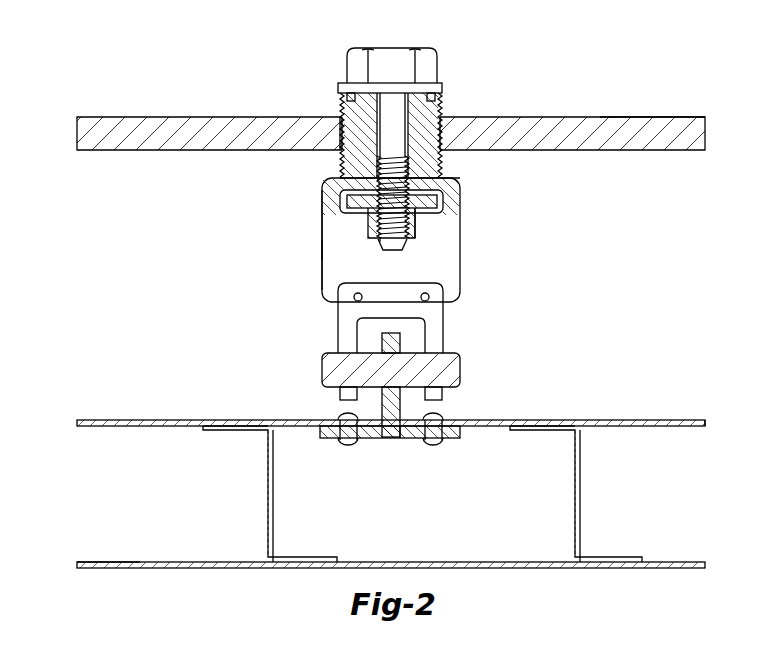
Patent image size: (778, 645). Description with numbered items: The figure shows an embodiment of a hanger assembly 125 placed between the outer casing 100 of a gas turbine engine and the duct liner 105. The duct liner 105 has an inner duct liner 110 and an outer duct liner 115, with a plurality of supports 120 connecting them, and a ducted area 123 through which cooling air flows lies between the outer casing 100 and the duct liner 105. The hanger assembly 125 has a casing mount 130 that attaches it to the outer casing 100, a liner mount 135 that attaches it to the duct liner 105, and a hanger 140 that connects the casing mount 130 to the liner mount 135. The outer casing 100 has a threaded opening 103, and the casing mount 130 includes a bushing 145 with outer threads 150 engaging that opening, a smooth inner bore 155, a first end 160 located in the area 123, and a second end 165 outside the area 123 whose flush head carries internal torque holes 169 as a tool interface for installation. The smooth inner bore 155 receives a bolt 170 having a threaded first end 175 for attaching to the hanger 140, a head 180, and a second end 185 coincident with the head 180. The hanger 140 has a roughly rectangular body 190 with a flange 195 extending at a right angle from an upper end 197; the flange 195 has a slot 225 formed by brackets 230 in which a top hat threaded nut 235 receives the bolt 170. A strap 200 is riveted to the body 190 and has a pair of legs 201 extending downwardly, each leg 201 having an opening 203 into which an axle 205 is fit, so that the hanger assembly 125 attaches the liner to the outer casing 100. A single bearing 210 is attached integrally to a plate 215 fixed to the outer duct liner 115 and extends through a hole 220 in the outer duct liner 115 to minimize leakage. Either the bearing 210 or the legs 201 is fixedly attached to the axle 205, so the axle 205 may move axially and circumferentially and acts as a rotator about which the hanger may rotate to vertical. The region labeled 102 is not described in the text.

The outer casing 100 is at (90, 117).
The aperture 102 is at (452, 128).
The opening 103 is at (340, 137).
The duct liner 105 is at (165, 590).
The inner duct liner 110 is at (120, 562).
The outer duct liner 115 is at (115, 420).
The supports 120 is at (268, 487).
The ducted area 123 is at (185, 212).
The hanger assembly 125 is at (226, 288).
The casing mount 130 is at (446, 155).
The liner mount 135 is at (562, 380).
The hanger 140 is at (411, 238).
The bushing 145 is at (443, 130).
The outer threads 150 is at (383, 136).
The inner bore 155 is at (337, 143).
The first end 160 is at (442, 178).
The second end 165 is at (340, 87).
The internal torque holes 169 is at (443, 97).
The bolt 170 is at (346, 138).
The threaded first end 175 is at (338, 175).
The head 180 is at (428, 70).
The second end 185 is at (395, 58).
The body 190 is at (372, 277).
The flange 195 is at (456, 190).
The upper end 197 is at (315, 203).
The strap 200 is at (393, 318).
The legs 201 is at (340, 328).
The opening 203 is at (325, 355).
The axle 205 is at (332, 385).
The bearing 210 is at (400, 395).
The plate 215 is at (378, 440).
The hole 220 is at (408, 440).
The slot 225 is at (428, 215).
The brackets 230 is at (340, 222).
The top hat threaded nut 235 is at (362, 246).